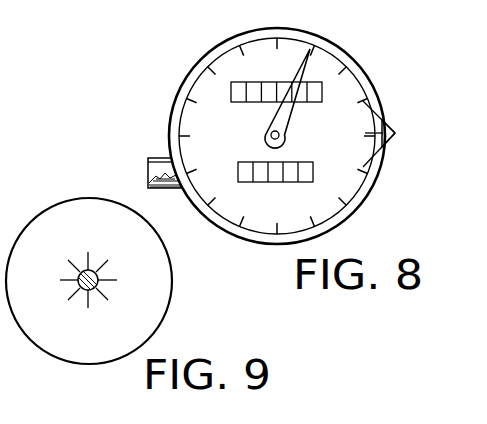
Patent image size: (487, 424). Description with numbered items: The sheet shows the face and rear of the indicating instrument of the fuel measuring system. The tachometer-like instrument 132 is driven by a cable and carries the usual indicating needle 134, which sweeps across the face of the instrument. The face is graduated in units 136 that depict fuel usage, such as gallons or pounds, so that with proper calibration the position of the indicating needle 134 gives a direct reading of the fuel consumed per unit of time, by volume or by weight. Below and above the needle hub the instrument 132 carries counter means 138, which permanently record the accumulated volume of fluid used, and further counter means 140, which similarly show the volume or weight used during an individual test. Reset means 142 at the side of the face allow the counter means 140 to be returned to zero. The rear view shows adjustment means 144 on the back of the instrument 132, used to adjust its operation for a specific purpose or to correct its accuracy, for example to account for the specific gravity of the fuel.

In FIG. 8, the tachometer-like instrument 132 is at (188, 80).
In FIG. 9, the tachometer-like instrument 132 is at (161, 302).
In FIG. 8, the indicating needle 134 is at (303, 64).
In FIG. 8, the units 136 is at (394, 134).
In FIG. 8, the counter means 138 is at (232, 85).
In FIG. 8, the counter means 140 is at (312, 179).
In FIG. 8, the reset means 142 is at (158, 158).
In FIG. 9, the adjustment means 144 is at (90, 271).